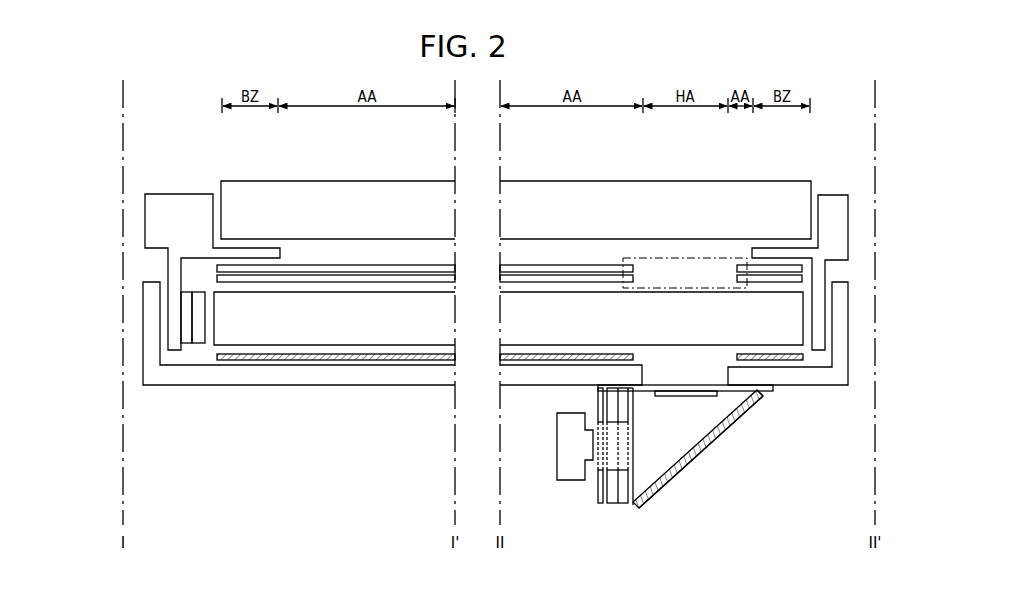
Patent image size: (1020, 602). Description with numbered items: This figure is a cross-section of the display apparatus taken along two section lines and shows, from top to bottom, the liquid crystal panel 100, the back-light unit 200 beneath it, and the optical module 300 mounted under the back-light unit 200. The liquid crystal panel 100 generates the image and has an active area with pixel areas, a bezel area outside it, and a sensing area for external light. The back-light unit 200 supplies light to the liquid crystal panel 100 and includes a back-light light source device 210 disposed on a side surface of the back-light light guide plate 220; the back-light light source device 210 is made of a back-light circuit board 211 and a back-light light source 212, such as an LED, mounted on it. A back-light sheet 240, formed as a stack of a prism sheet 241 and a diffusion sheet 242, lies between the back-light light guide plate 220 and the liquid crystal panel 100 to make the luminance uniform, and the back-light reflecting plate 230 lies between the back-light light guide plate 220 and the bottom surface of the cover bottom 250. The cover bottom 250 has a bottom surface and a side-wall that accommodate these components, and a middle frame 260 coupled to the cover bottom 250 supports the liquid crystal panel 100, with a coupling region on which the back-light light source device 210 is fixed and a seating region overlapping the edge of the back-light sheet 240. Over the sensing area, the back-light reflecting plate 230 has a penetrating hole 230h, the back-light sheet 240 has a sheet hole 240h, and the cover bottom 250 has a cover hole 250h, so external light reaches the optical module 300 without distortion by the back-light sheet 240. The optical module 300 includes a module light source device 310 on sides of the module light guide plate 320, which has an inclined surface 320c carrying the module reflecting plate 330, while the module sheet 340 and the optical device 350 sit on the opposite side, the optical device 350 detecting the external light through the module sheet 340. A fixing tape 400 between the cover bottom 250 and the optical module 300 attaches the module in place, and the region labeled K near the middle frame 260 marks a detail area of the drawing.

The liquid crystal panel 100 is at (800, 188).
The back-light unit 200 is at (45, 210).
The back-light light source device 210 is at (126, 314).
The back-light circuit board 211 is at (189, 300).
The back-light light source 212 is at (196, 325).
The back-light light guide plate 220 is at (225, 334).
The back-light reflecting plate 230 is at (218, 357).
The penetrating hole 230h is at (711, 351).
The back-light sheet 240 is at (425, 351).
The prism sheet 241 is at (385, 279).
The diffusion sheet 242 is at (432, 269).
The sheet hole 240h is at (711, 262).
The cover bottom 250 is at (167, 378).
The cover hole 250h is at (715, 377).
The middle frame 260 is at (152, 222).
The optical module 300 is at (738, 488).
The module light source device 310 is at (668, 401).
The module light guide plate 320 is at (777, 474).
The inclined surface 320c is at (737, 402).
The module reflecting plate 330 is at (732, 425).
The module sheet 340 is at (615, 508).
The optical device 350 is at (574, 485).
The fixing tape 400 is at (760, 392).
The gap K is at (748, 287).